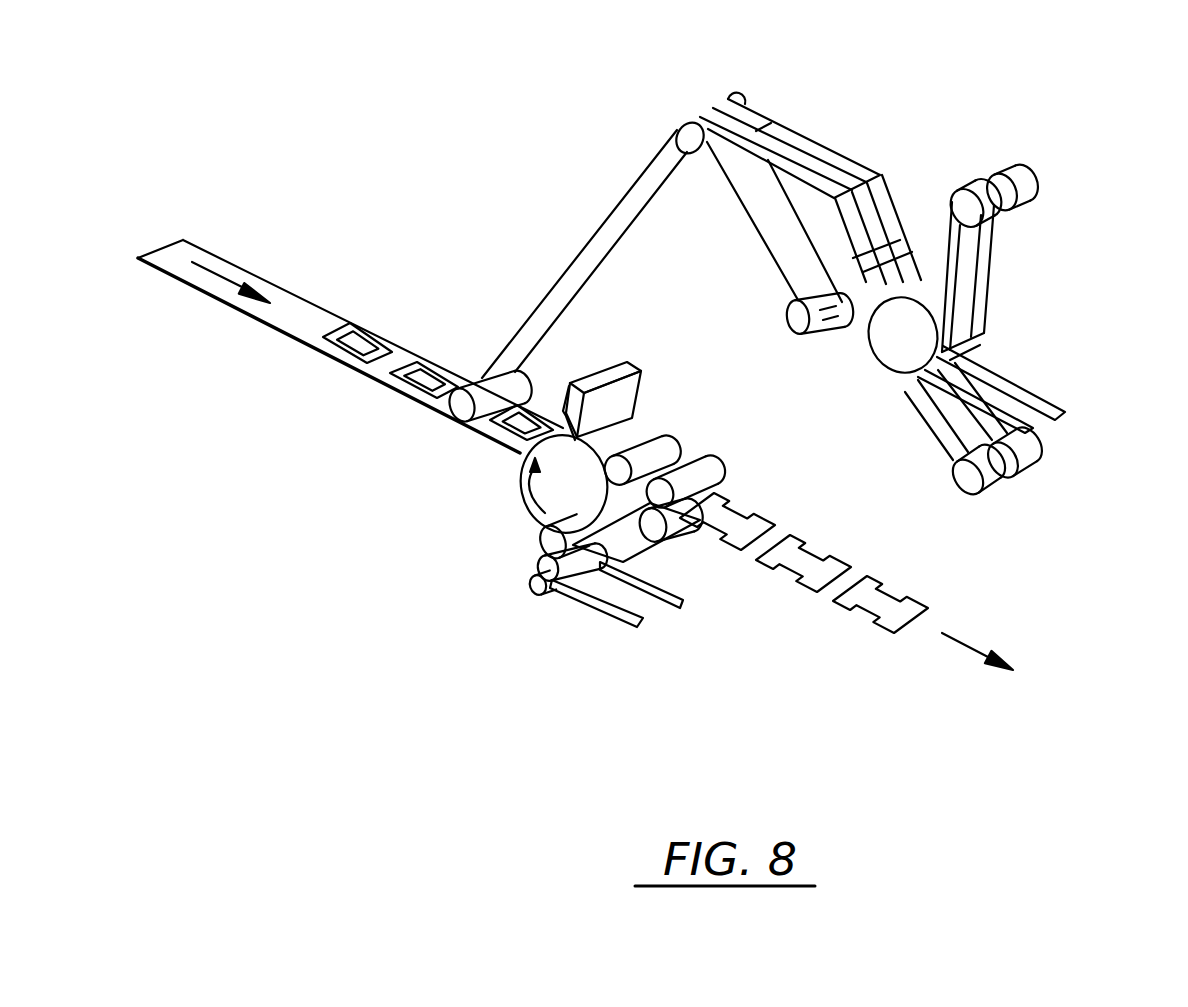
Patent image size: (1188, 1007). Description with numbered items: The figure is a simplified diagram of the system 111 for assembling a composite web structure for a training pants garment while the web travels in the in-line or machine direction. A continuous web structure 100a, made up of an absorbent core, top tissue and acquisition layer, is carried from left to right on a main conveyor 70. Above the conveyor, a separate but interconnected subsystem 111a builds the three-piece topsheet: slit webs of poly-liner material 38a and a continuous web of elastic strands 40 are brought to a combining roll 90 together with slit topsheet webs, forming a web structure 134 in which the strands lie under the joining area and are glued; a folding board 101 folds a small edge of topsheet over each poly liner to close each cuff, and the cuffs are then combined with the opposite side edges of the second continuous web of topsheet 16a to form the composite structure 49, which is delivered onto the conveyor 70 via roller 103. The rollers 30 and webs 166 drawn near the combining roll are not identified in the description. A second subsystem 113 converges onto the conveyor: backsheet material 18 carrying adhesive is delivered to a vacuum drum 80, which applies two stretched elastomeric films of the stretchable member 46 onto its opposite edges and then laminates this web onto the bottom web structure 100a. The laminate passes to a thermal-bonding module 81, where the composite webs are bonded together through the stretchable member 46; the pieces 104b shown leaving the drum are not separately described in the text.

The main conveyor 70 is at (340, 310).
The continuous web structure 100a is at (435, 372).
The roller 103 is at (472, 412).
The composite structure 49 is at (597, 220).
The folding board 101 is at (837, 150).
The web structure 134 is at (896, 268).
The second continuous web of topsheet 16a is at (767, 212).
The thermal-bonding module 81 is at (587, 360).
The vacuum drum 80 is at (540, 513).
The backsheet material 18 is at (660, 547).
The stretchable member 46 is at (660, 593).
The subsystem 113 is at (557, 600).
The apparatus or system 111 is at (403, 628).
The subsystem 111a is at (793, 98).
The cut pieces 104b is at (876, 620).
The combining roll 90 is at (905, 355).
The rollers 30 is at (1025, 183).
The belts 166 is at (945, 276).
The elastic strands 40 is at (1035, 389).
The poly-liner material 38a is at (953, 462).